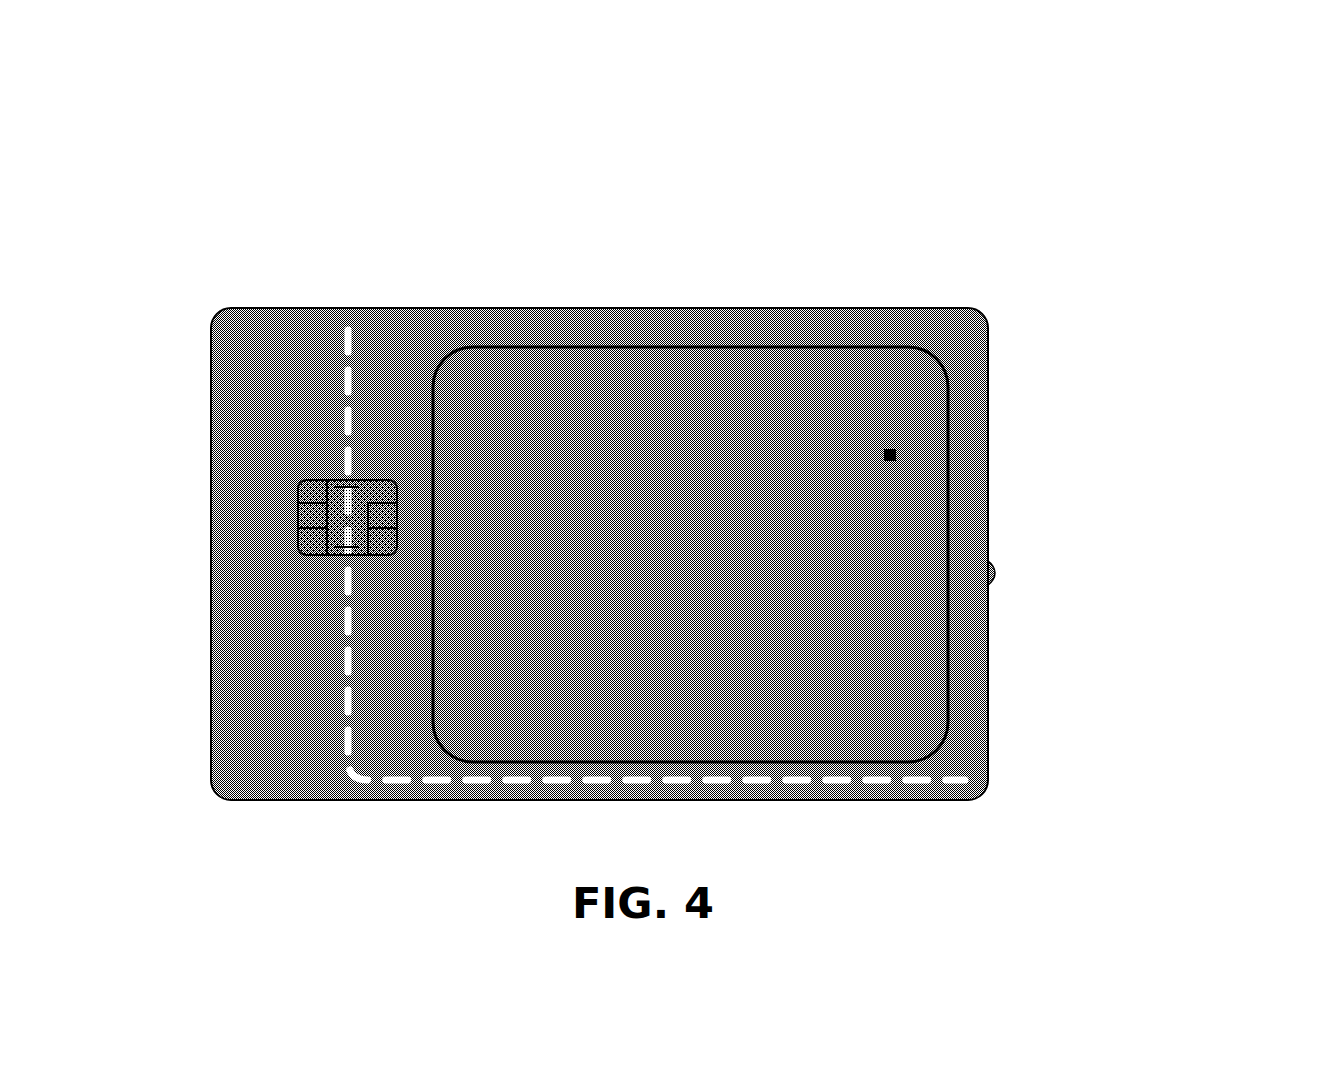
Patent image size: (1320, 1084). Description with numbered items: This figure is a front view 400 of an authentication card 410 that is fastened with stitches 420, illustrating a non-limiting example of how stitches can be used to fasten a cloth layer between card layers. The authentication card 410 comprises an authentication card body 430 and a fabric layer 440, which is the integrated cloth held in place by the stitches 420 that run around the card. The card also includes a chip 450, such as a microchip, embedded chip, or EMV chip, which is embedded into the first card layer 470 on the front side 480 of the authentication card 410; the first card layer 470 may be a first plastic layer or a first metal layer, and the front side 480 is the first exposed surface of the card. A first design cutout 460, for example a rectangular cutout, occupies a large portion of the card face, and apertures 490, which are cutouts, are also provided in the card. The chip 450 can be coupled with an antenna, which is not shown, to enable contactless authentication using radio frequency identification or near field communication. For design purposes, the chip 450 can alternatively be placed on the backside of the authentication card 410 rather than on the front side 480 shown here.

The front view 400 is at (1205, 120).
The authentication card 410 is at (211, 356).
The stitches 420 is at (990, 563).
The authentication card body 430 is at (822, 308).
The fabric layer 440 is at (988, 357).
The chip 450 is at (293, 493).
The first design cutout 460 is at (622, 347).
The first card layer 470 is at (211, 572).
The front side 480 is at (211, 668).
The apertures 490 is at (968, 747).